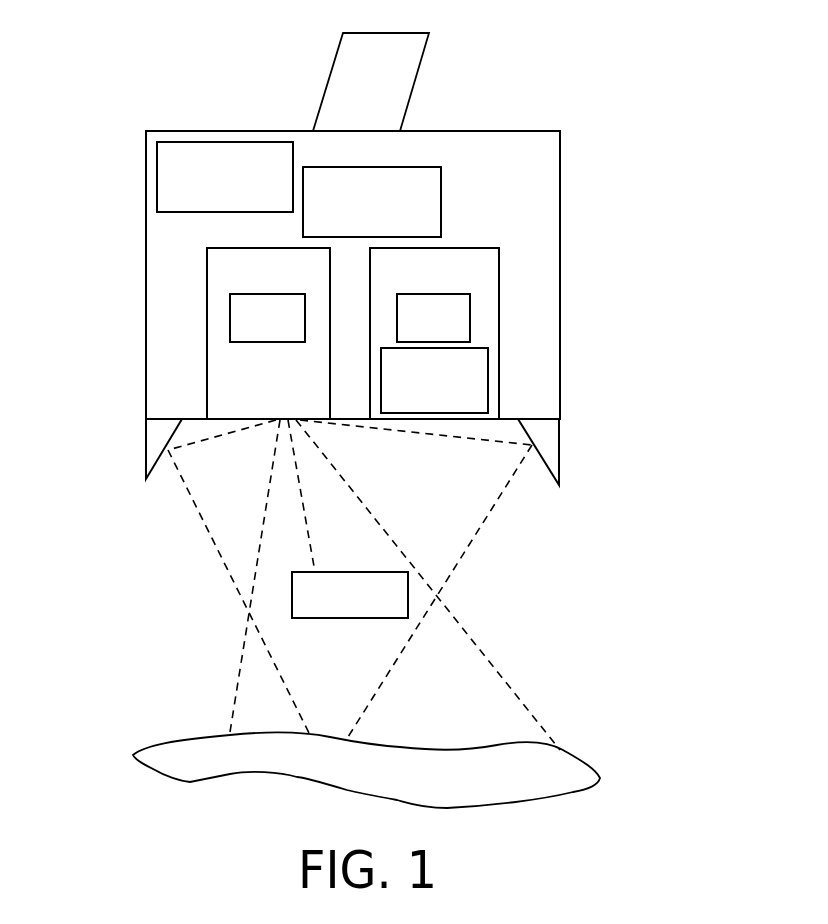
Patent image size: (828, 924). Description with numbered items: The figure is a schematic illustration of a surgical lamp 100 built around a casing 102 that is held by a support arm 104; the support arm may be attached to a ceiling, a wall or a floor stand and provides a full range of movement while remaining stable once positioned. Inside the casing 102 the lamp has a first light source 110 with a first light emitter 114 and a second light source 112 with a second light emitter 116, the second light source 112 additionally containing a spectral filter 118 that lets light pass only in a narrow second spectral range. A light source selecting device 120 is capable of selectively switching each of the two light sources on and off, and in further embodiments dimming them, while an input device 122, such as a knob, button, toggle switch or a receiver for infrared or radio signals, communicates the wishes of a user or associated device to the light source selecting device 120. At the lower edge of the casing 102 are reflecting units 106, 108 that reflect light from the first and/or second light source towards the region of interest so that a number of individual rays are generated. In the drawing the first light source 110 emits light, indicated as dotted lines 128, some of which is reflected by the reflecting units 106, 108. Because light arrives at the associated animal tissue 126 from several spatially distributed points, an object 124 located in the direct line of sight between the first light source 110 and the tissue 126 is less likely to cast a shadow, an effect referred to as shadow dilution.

The surgical lamp 100 is at (533, 92).
The casing 102 is at (524, 181).
The support arm 104 is at (391, 86).
The reflecting unit 106 is at (152, 440).
The reflecting unit 108 is at (550, 440).
The first light source 110 is at (316, 284).
The second light source 112 is at (485, 284).
The first light emitter 114 is at (289, 329).
The second light emitter 116 is at (455, 329).
The spectral filter 118 is at (456, 392).
The light source selecting device 120 is at (420, 201).
The input device 122 is at (273, 174).
The object 124 is at (356, 607).
The associated animal tissue 126 is at (469, 791).
The dotted lines 128 is at (479, 646).